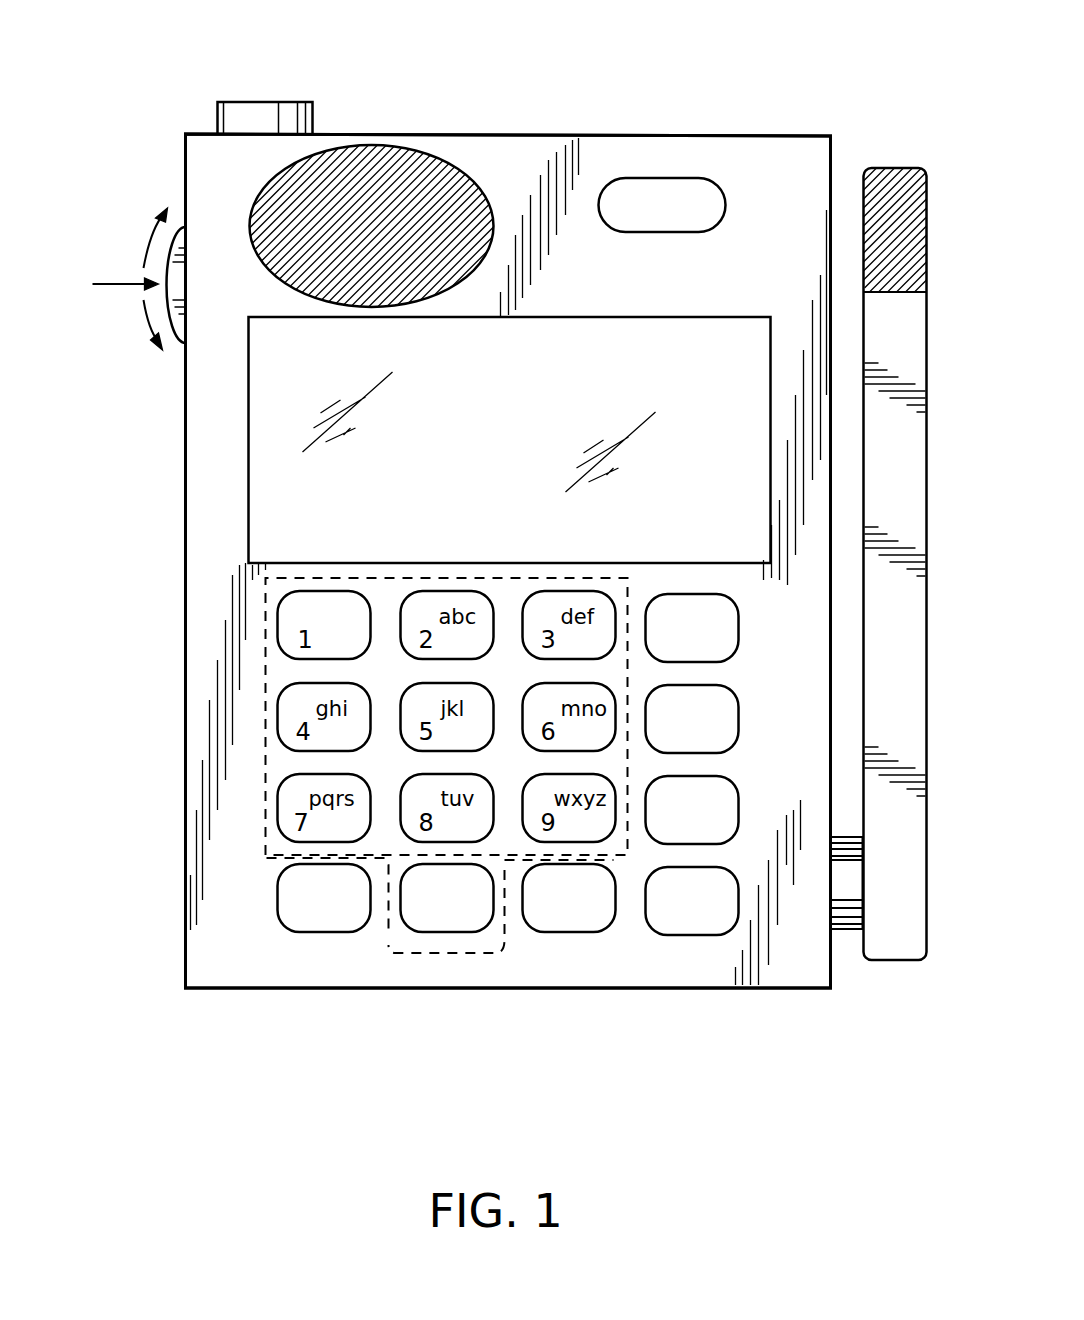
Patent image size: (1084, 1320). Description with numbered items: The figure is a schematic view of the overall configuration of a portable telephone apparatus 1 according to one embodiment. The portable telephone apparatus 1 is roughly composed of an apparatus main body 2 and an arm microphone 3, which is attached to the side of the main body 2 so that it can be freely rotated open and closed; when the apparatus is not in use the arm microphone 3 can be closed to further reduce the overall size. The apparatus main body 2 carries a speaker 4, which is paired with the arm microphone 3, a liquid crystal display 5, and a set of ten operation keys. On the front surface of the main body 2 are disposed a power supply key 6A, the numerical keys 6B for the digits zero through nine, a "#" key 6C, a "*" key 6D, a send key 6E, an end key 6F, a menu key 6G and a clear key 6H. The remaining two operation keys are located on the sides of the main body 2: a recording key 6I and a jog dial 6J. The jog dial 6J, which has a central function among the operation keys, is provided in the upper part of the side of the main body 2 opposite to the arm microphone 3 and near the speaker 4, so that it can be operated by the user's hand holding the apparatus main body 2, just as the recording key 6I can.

The portable telephone apparatus 1 is at (873, 32).
The apparatus main body 2 is at (530, 136).
The arm microphone 3 is at (940, 956).
The speaker 4 is at (352, 147).
The liquid crystal display 5 is at (248, 437).
The power supply key 6A is at (655, 178).
The numerical keys 6B is at (447, 933).
The "#" key 6C is at (570, 933).
The "*" key 6D is at (323, 933).
The send key 6E is at (738, 800).
The end key 6F is at (686, 935).
The menu key 6G is at (738, 624).
The clear key 6H is at (738, 712).
The recording key 6I is at (262, 100).
The jog dial 6J is at (170, 340).